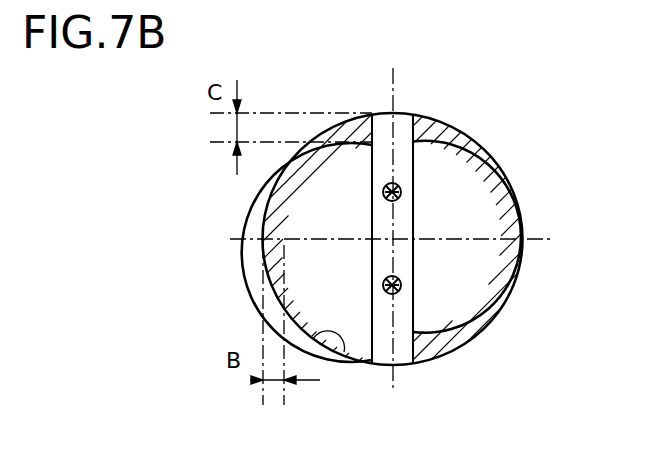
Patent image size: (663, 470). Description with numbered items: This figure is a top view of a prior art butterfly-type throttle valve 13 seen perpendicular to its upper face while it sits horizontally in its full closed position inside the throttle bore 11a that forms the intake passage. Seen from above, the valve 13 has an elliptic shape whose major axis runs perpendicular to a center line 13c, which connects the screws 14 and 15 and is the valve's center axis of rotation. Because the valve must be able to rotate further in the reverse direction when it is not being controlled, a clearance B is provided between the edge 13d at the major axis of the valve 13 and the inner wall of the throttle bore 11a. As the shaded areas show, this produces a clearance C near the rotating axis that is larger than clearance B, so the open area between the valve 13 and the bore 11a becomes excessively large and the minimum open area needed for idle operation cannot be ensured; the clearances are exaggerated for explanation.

The throttle valve 13 is at (308, 207).
The center line 13c is at (393, 83).
The edge 13d is at (265, 223).
The screw 14 is at (401, 190).
The screw 15 is at (401, 287).
The throttle bore 11a is at (340, 353).